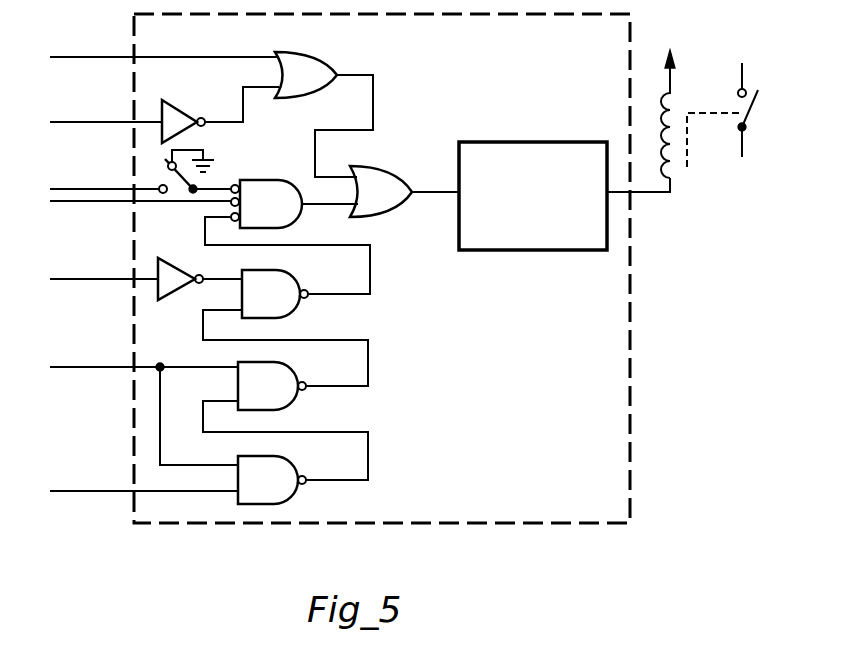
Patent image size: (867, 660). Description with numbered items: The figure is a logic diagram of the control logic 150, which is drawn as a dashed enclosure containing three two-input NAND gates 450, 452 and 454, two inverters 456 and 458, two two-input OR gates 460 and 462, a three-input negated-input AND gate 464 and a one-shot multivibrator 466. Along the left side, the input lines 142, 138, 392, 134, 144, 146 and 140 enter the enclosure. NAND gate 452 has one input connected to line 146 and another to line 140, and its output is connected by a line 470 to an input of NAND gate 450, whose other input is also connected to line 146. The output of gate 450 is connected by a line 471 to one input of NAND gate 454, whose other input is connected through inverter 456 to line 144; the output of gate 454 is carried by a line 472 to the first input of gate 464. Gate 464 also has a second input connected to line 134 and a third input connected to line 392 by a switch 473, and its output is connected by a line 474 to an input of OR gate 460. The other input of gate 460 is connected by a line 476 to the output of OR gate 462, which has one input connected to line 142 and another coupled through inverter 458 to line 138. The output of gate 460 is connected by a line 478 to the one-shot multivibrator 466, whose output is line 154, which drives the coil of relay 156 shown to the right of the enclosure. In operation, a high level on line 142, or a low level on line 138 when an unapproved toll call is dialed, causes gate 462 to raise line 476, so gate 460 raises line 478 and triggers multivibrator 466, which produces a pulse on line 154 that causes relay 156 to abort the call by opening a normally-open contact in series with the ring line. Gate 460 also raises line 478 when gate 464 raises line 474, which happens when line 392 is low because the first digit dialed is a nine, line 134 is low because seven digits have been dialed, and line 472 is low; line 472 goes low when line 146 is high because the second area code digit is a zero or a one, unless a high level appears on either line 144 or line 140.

The control logic 150 is at (628, 385).
The line 142 is at (93, 54).
The line 138 is at (93, 121).
The line 392 is at (100, 187).
The line 134 is at (96, 203).
The line 144 is at (93, 278).
The line 146 is at (97, 366).
The line 140 is at (93, 491).
The inverter 458 is at (178, 112).
The switch 473 is at (198, 179).
The three-input, negated input AND gate 464 is at (262, 181).
The two-input OR gate 462 is at (330, 64).
The line 476 is at (374, 110).
The two-input OR gate 460 is at (398, 167).
The line 474 is at (312, 205).
The line 478 is at (428, 196).
The one-shot multivibrator 466 is at (548, 143).
The line 154 is at (643, 196).
The relay 156 is at (680, 172).
The inverter 456 is at (178, 252).
The two-input NAND gate 454 is at (298, 284).
The line 472 is at (371, 288).
The two-input NAND gate 450 is at (297, 374).
The line 471 is at (369, 372).
The two-input NAND gate 452 is at (297, 468).
The line 470 is at (368, 464).